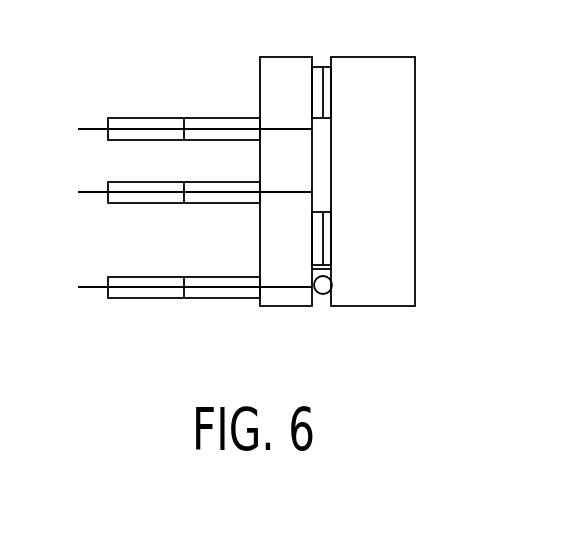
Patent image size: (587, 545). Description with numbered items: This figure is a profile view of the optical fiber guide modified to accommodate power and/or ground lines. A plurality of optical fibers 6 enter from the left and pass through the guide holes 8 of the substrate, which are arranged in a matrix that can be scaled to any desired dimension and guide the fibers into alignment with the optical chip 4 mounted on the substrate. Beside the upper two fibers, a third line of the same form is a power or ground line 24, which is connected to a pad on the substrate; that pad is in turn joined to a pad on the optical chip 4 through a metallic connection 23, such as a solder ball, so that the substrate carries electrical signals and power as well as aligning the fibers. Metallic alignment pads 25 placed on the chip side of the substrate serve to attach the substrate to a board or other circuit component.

The optical chip 4 is at (413, 93).
The optical fibers 6 is at (148, 118).
The guide holes 8 is at (285, 187).
The metallic connection 23 is at (325, 295).
The power or ground line 24 is at (137, 297).
The metallic alignment pads 25 is at (317, 67).